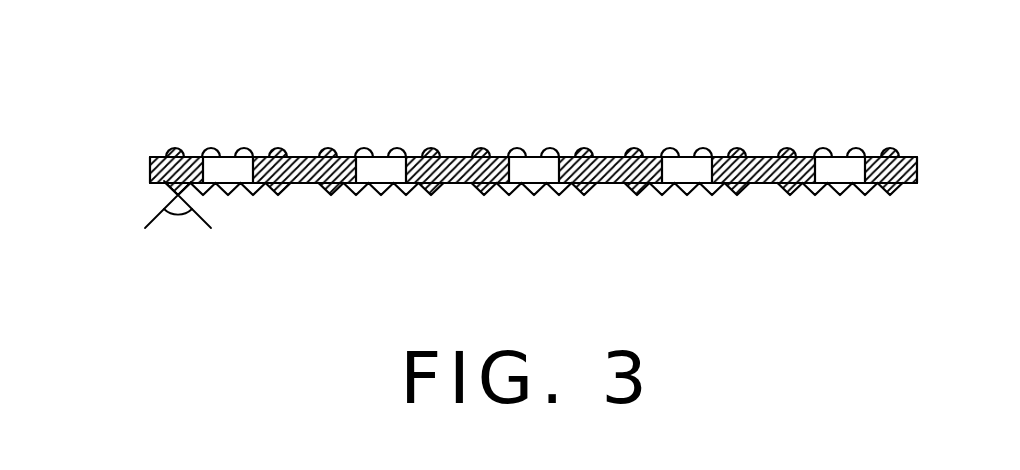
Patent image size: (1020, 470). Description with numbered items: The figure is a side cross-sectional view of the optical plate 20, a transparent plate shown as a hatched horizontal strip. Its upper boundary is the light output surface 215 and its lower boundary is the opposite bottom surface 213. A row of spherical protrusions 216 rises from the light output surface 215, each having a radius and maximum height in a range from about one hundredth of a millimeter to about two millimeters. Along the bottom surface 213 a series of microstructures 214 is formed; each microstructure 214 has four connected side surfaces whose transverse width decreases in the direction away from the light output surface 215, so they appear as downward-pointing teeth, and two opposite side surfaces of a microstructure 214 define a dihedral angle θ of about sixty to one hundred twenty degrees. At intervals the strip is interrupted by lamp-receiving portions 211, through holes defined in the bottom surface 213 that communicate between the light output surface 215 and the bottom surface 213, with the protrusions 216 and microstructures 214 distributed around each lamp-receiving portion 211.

The optical plate 20 is at (162, 68).
The lamp-receiving portion 211 is at (687, 168).
The bottom surface 213 is at (764, 183).
The microstructure 214 is at (484, 186).
The light output surface 215 is at (762, 157).
The spherical protrusion 216 is at (434, 150).